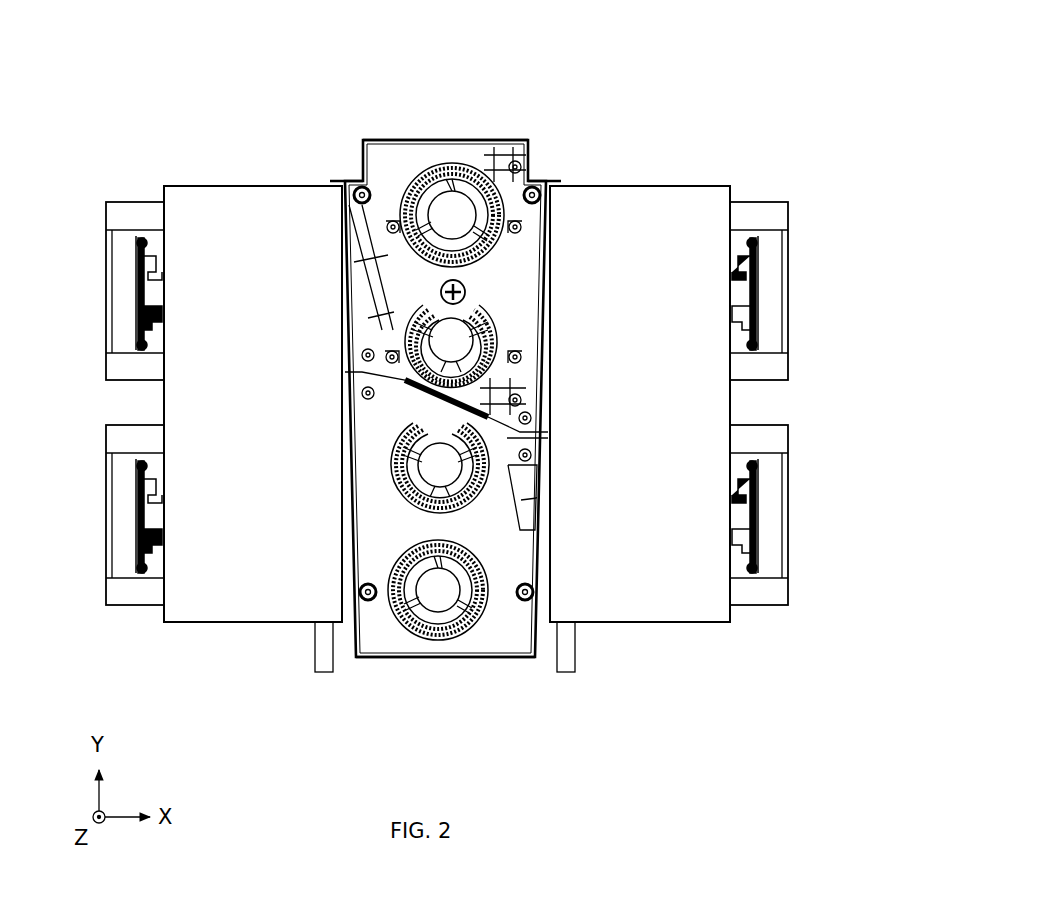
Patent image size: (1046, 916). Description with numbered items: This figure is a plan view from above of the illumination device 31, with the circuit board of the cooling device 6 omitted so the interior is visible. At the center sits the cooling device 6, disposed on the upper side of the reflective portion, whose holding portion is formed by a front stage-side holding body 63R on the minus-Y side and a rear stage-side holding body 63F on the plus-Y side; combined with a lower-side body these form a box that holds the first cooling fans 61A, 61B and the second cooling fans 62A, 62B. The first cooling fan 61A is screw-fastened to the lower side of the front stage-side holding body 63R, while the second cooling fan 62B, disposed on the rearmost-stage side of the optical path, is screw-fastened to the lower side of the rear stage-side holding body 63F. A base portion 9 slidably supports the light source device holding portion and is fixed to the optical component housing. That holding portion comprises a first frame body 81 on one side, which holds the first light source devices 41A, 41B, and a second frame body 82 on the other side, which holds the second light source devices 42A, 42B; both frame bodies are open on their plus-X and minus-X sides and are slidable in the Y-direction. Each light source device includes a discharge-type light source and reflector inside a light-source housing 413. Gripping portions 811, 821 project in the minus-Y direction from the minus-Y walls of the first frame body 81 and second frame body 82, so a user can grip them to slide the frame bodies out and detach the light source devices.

The illumination device 31 is at (608, 54).
The cooling device 6 is at (488, 106).
The base portion 9 is at (348, 612).
The rear stage-side holding body 63F is at (393, 146).
The front stage-side holding body 63R is at (464, 655).
The second cooling fan 62B is at (445, 218).
The first cooling fan 61B is at (460, 335).
The second cooling fan 62A is at (430, 472).
The first cooling fan 61A is at (450, 586).
The first frame body 81 is at (209, 612).
The second frame body 82 is at (656, 612).
The gripping portion 811 is at (325, 673).
The gripping portion 821 is at (567, 673).
The first light source device 41B is at (131, 184).
The first light source device 41A is at (132, 628).
The second light source device 42B is at (766, 184).
The second light source device 42A is at (765, 628).
The light-source housing 413 is at (112, 367).